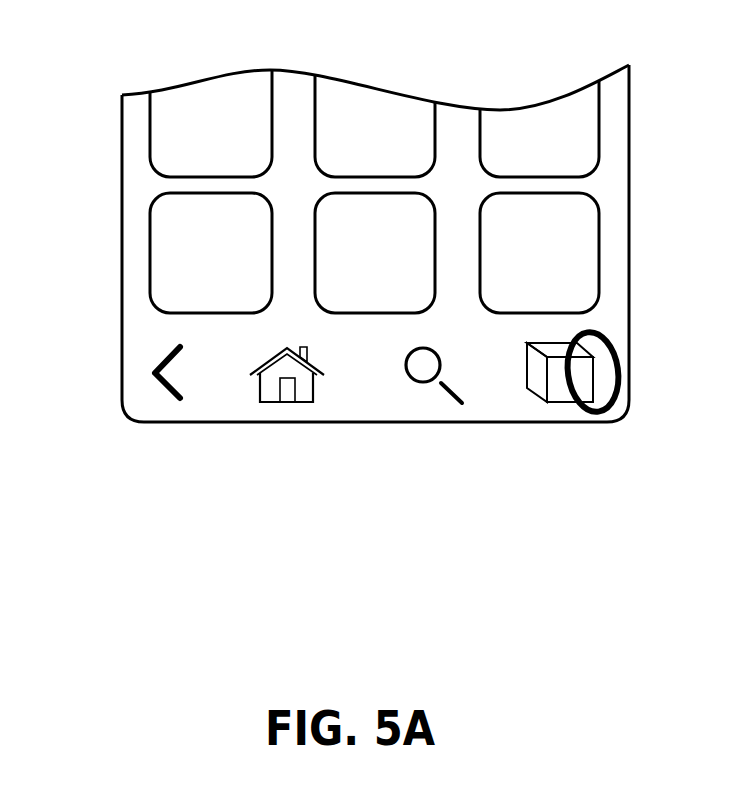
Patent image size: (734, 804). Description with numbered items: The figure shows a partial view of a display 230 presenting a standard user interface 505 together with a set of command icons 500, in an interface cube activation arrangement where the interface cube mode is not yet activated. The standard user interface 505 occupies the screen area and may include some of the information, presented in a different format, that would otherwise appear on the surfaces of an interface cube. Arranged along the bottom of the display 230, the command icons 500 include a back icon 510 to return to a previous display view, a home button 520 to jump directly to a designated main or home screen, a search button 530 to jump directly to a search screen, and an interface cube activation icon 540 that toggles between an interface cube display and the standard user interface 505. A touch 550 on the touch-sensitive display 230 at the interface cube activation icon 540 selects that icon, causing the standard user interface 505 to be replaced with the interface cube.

The display 230 is at (180, 86).
The set of command icons 500 is at (377, 308).
The standard user interface 505 is at (143, 167).
The back icon 510 is at (172, 400).
The home button 520 is at (283, 402).
The search button 530 is at (450, 400).
The interface cube activation icon 540 is at (563, 402).
The touch 550 is at (635, 341).